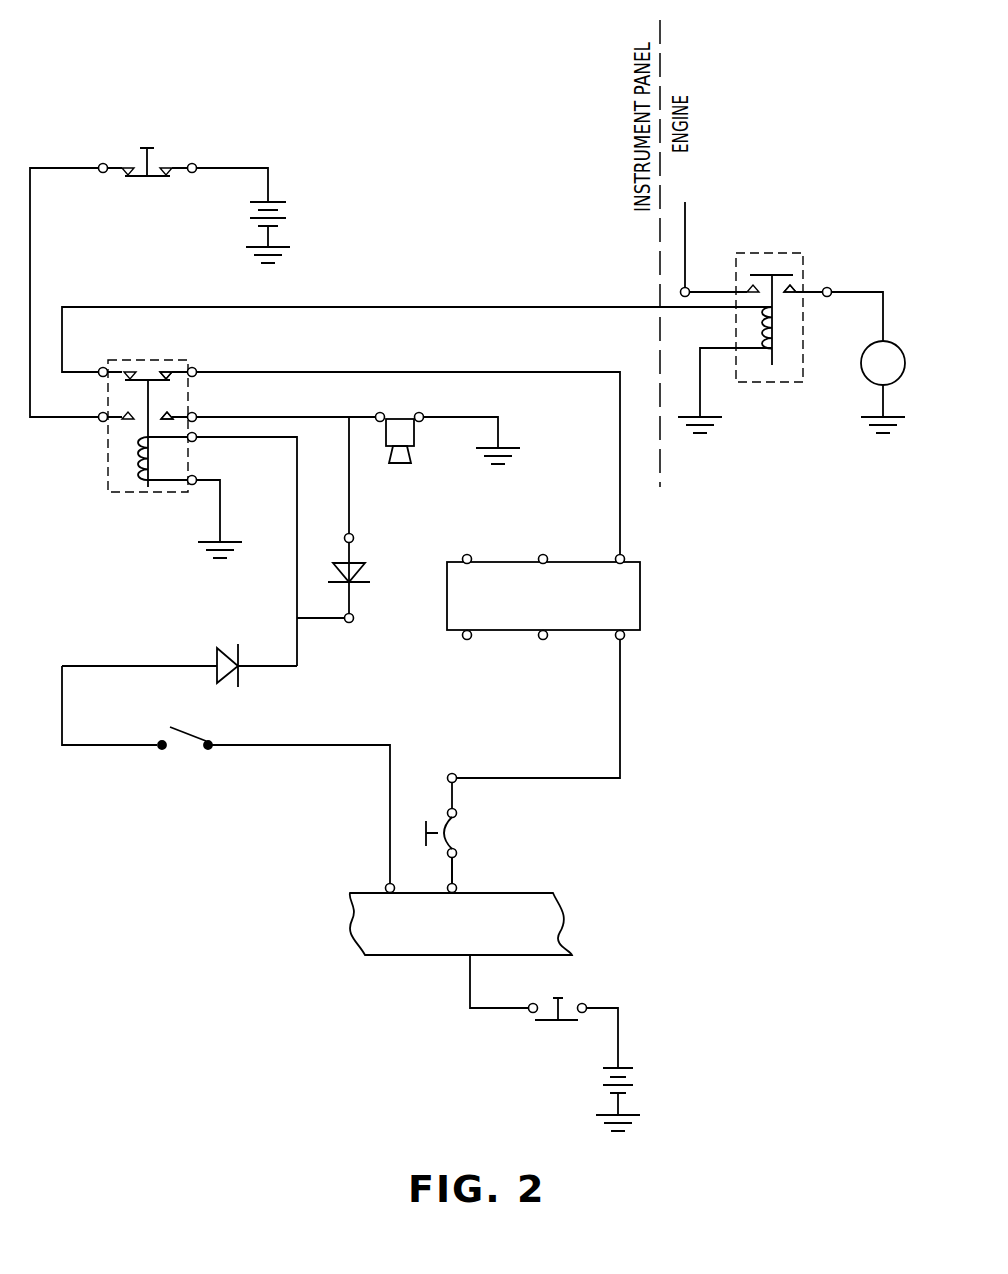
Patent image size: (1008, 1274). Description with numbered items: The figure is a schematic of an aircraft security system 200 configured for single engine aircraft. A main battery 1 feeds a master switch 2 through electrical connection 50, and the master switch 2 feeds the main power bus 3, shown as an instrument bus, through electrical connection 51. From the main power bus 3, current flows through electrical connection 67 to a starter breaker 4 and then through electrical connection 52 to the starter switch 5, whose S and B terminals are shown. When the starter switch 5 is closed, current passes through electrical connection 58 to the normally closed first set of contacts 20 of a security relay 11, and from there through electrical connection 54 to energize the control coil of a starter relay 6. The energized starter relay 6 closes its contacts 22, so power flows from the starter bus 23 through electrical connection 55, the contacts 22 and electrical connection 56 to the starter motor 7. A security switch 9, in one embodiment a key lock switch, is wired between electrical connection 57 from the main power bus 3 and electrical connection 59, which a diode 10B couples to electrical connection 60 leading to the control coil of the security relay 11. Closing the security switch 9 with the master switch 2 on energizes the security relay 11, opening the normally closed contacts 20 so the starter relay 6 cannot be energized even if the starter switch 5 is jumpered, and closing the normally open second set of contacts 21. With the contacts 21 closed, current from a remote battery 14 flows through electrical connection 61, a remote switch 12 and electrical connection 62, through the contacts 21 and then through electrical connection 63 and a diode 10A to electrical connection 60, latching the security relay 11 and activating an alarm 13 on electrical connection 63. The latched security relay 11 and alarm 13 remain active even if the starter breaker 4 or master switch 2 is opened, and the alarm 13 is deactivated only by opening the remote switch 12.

The aircraft security system 200 is at (128, 66).
The electrical connection 62 is at (78, 166).
The electrical connection 61 is at (240, 166).
The remote switch 12 is at (152, 180).
The remote battery 14 is at (272, 200).
The electrical connection 54 is at (418, 305).
The first set of contacts 20 is at (166, 366).
The second set of contacts 21 is at (170, 413).
The security relay 11 is at (108, 458).
The electrical connection 63 is at (302, 415).
The alarm 13 is at (416, 430).
The electrical connection 58 is at (496, 371).
The electrical connection 60 is at (296, 518).
The diode 10A is at (360, 584).
The diode 10B is at (241, 648).
The starter switch 5 is at (642, 598).
The electrical connection 59 is at (142, 662).
The security switch 9 is at (192, 735).
The electrical connection 57 is at (300, 742).
The electrical connection 52 is at (540, 776).
The starter breaker 4 is at (438, 821).
The electrical connection 67 is at (454, 872).
The main power bus 3 is at (566, 926).
The electrical connection 51 is at (470, 983).
The master switch 2 is at (548, 1022).
The electrical connection 50 is at (620, 1038).
The main battery 1 is at (630, 1088).
The starter bus 23 is at (688, 226).
The electrical connection 55 is at (714, 290).
The starter relay 6 is at (772, 252).
The contacts 22 is at (794, 288).
The electrical connection 56 is at (862, 292).
The starter motor 7 is at (860, 362).